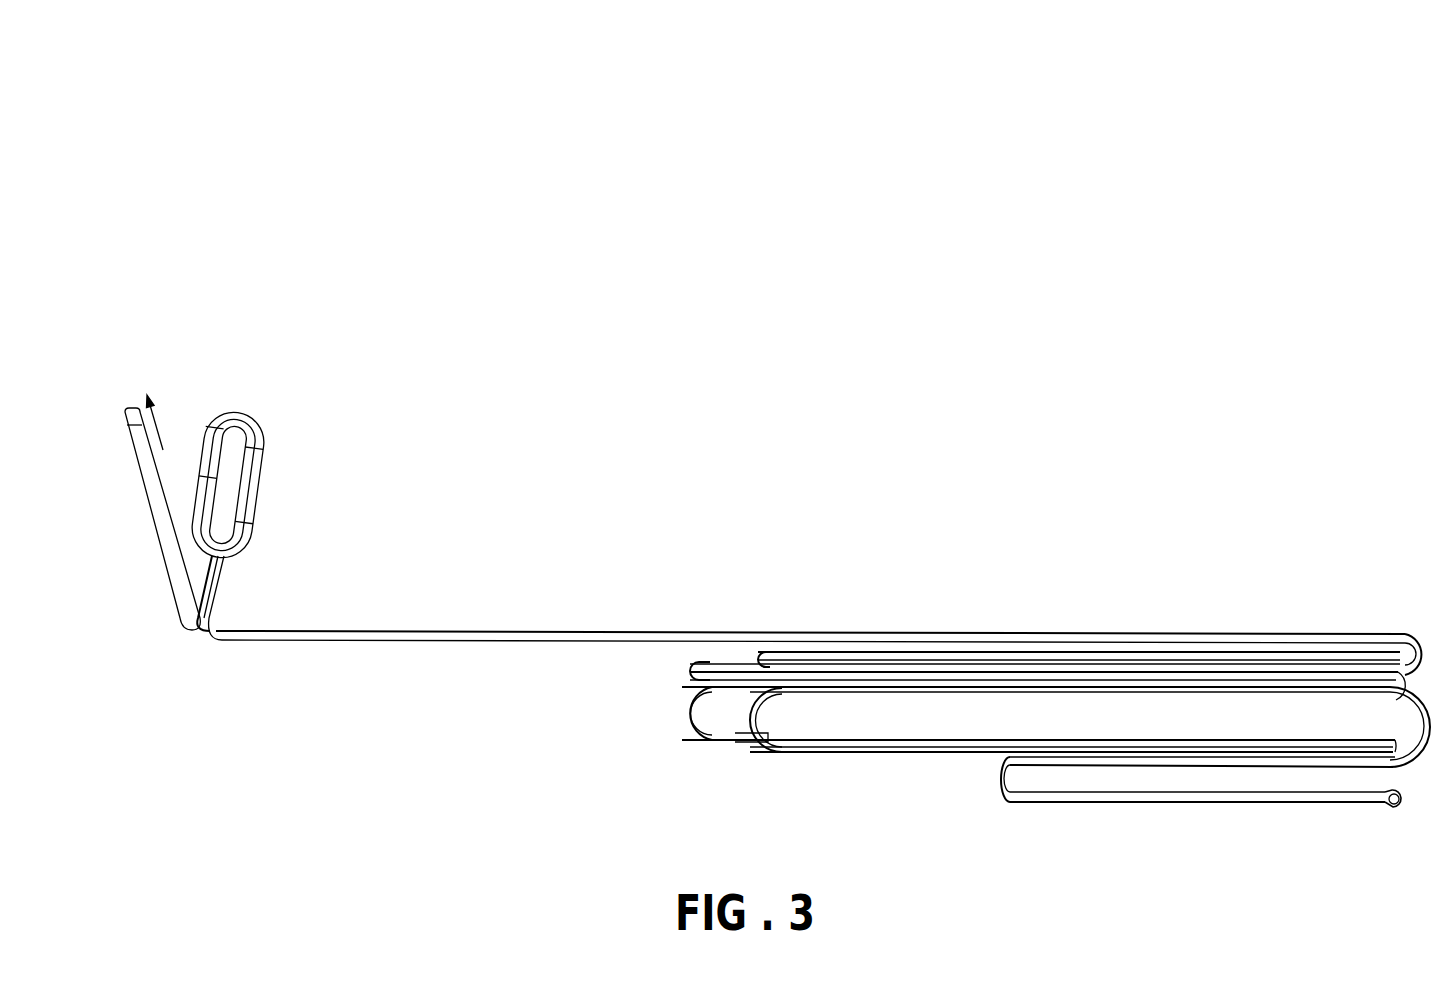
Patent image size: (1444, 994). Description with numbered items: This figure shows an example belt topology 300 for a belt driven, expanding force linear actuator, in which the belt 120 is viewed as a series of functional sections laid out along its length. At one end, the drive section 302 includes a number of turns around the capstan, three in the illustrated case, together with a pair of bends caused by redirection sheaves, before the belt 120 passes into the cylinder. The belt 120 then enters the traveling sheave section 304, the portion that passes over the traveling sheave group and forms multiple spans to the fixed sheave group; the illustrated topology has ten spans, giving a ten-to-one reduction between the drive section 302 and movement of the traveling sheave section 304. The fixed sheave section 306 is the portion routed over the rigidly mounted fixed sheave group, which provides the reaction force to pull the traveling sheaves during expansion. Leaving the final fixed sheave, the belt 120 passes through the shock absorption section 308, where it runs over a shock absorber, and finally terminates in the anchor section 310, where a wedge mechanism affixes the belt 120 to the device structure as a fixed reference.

The belt topology 300 is at (1332, 123).
The belt 120 is at (557, 635).
The drive section 302 is at (300, 485).
The traveling sheave section 304 is at (867, 607).
The fixed sheave section 306 is at (1422, 627).
The shock absorption section 308 is at (1278, 807).
The anchor section 310 is at (1377, 809).